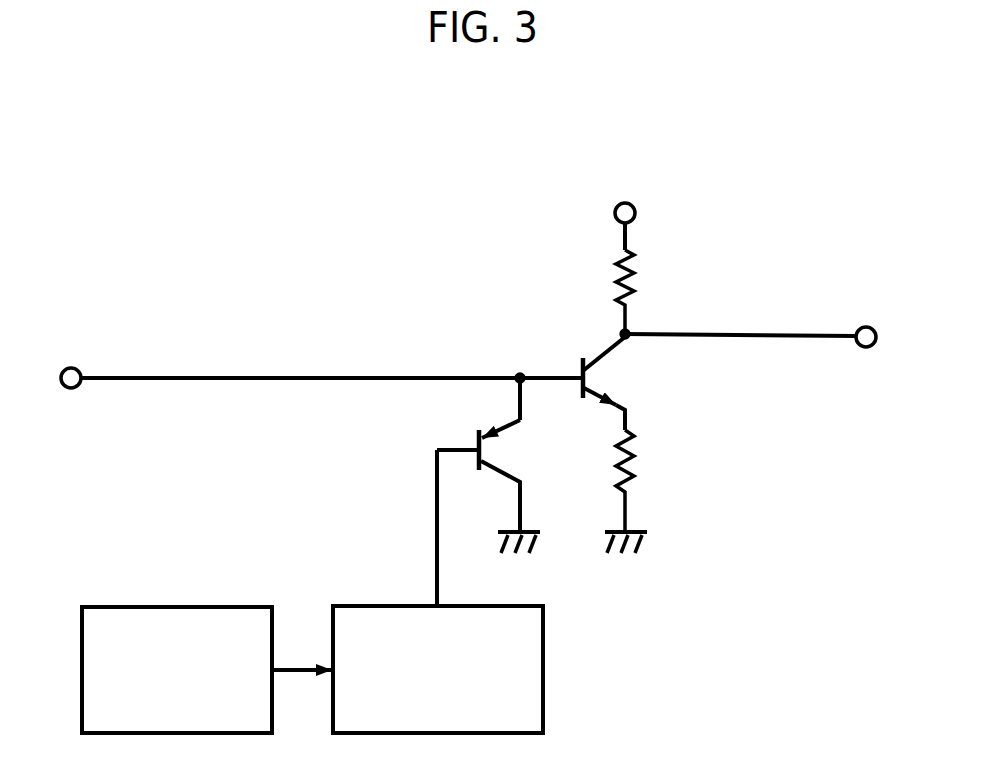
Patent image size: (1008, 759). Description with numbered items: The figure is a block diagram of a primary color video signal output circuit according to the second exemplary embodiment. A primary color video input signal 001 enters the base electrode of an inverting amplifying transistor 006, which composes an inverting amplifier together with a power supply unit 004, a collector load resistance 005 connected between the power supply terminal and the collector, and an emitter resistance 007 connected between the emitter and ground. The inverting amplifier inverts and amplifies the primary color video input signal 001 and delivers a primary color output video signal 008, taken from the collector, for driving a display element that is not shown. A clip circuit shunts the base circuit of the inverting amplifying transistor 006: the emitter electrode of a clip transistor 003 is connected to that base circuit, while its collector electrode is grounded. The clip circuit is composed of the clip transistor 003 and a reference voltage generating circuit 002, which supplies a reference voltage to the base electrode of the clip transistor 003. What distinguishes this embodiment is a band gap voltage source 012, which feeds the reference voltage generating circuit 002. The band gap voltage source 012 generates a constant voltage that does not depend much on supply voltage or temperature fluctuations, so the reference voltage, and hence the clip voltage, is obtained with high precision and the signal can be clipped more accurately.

The primary color video input signal 001 is at (78, 368).
The reference voltage generating circuit 002 is at (543, 658).
The clip transistor 003 is at (500, 463).
The power supply unit 004 is at (610, 233).
The collector load resistance 005 is at (628, 298).
The inverting amplifying transistor 006 is at (597, 385).
The emitter resistance 007 is at (632, 465).
The primary color output video signal 008 is at (873, 328).
The band gap voltage source 012 is at (145, 587).